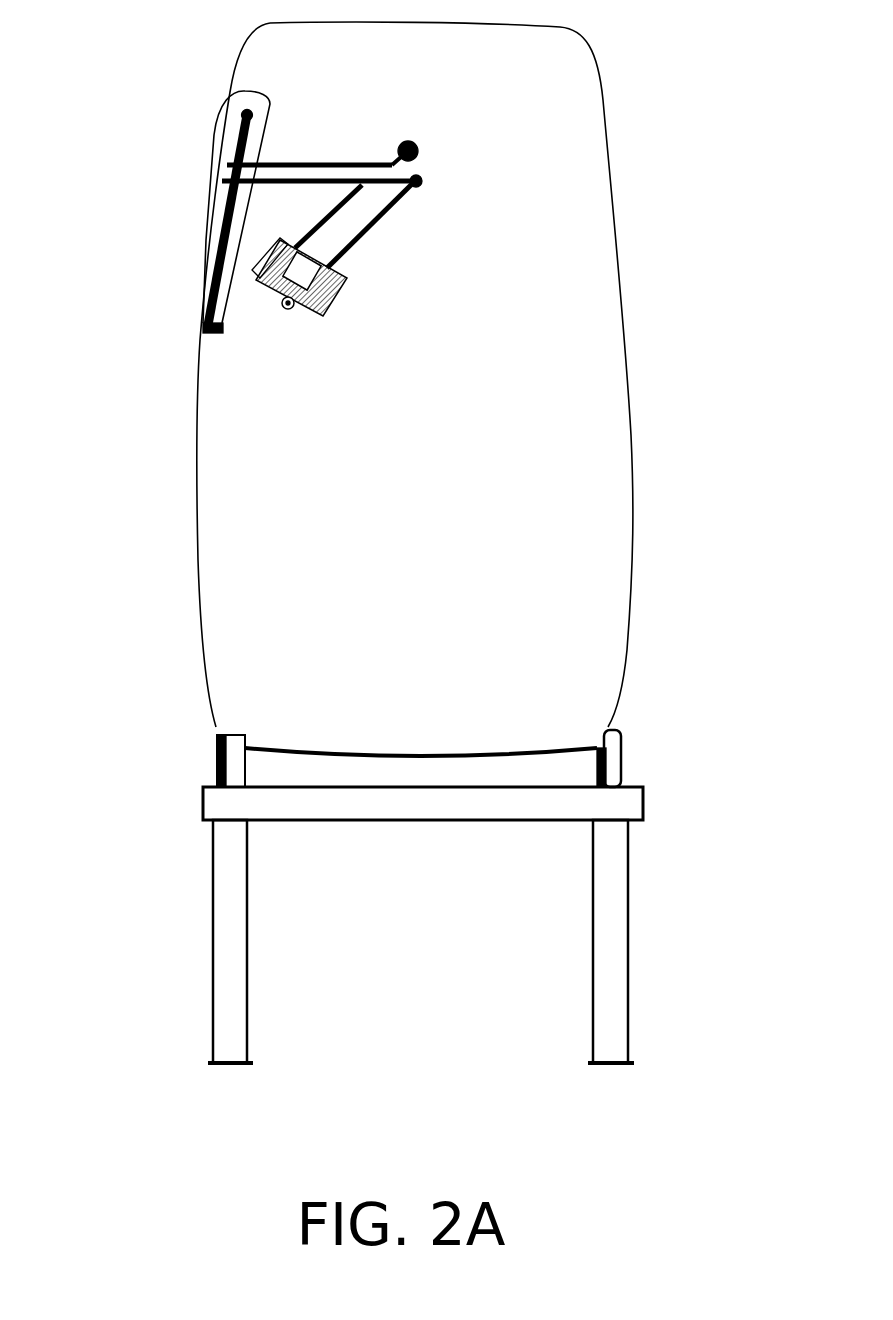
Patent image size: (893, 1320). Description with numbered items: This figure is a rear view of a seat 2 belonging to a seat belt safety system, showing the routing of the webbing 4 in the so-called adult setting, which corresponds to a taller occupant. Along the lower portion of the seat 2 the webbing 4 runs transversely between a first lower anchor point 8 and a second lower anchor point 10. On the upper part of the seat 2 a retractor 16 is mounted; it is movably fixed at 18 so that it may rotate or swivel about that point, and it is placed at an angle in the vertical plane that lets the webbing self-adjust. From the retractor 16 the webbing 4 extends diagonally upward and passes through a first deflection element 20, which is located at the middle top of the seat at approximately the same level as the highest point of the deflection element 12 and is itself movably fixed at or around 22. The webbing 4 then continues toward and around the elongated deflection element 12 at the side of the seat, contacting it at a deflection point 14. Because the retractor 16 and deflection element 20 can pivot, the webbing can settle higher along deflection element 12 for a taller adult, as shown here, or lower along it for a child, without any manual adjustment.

The seat 2 is at (190, 440).
The webbing 4 is at (353, 220).
The first lower anchor point 8 is at (215, 750).
The second lower anchor point 10 is at (635, 747).
The deflection element 12 is at (187, 322).
The deflection point 14 is at (223, 162).
The retractor 16 is at (337, 293).
The movable fixing point of retractor 18 is at (293, 313).
The first deflection element 20 is at (421, 177).
The movable fixing point of deflection element 22 is at (417, 143).